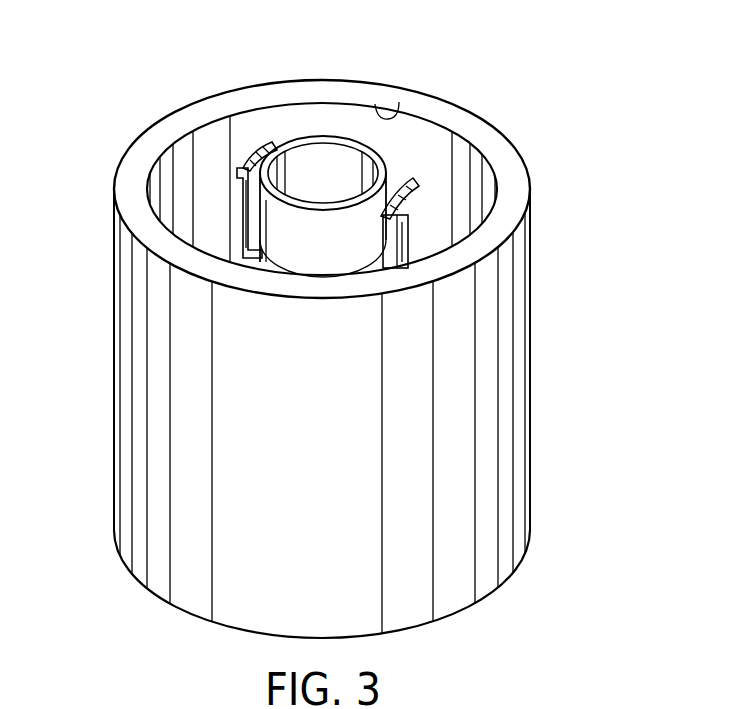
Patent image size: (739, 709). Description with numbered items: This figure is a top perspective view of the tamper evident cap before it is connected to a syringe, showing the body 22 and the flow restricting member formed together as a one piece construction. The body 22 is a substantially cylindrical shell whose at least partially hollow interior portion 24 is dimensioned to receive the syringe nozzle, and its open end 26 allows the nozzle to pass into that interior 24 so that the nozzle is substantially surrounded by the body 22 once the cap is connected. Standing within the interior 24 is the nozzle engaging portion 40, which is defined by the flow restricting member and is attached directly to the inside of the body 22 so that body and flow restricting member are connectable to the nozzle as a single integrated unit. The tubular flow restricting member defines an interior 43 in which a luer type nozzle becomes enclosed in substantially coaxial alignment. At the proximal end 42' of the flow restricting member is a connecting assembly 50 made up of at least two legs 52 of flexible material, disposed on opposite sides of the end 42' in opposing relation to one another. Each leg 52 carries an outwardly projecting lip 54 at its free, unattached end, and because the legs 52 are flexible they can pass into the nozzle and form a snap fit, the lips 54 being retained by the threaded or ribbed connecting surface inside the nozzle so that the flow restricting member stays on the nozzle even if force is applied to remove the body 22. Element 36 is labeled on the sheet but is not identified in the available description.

The body 22 is at (530, 436).
The interior portion 24 is at (415, 160).
The open end 26 is at (377, 110).
The element 36 is at (474, 701).
The nozzle engaging portion 40 is at (302, 133).
The proximal end 42' is at (323, 267).
The interior 43 is at (327, 181).
The connecting assembly 50 is at (435, 170).
The legs 52 is at (243, 202).
The lip 54 is at (247, 148).